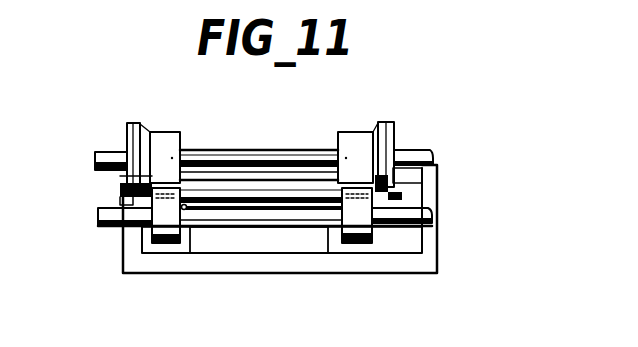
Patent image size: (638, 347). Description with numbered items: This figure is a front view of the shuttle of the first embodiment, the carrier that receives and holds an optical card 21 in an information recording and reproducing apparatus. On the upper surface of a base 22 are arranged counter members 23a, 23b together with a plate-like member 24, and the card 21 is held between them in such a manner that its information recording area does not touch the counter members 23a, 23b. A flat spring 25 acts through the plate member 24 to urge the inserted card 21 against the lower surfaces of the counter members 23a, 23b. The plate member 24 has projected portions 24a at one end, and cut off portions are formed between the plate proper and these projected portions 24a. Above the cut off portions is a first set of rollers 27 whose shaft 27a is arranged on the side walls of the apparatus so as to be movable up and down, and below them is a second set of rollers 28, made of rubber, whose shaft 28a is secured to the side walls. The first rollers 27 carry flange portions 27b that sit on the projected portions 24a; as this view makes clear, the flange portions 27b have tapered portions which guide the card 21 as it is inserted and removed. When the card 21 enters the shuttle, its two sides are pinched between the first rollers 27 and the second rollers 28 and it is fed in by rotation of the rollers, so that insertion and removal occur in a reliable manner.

The optical card 21 is at (228, 183).
The base 22 is at (440, 260).
The counter member 23a is at (113, 180).
The counter member 23b is at (437, 165).
The plate-like member 24 is at (117, 228).
The projected portion 24a is at (122, 195).
The flat spring 25 is at (342, 240).
The first set of rollers 27 is at (130, 123).
The shaft 27a is at (288, 150).
The flange portion 27b is at (137, 125).
The second set of rollers 28 is at (165, 243).
The shaft 28a is at (262, 228).